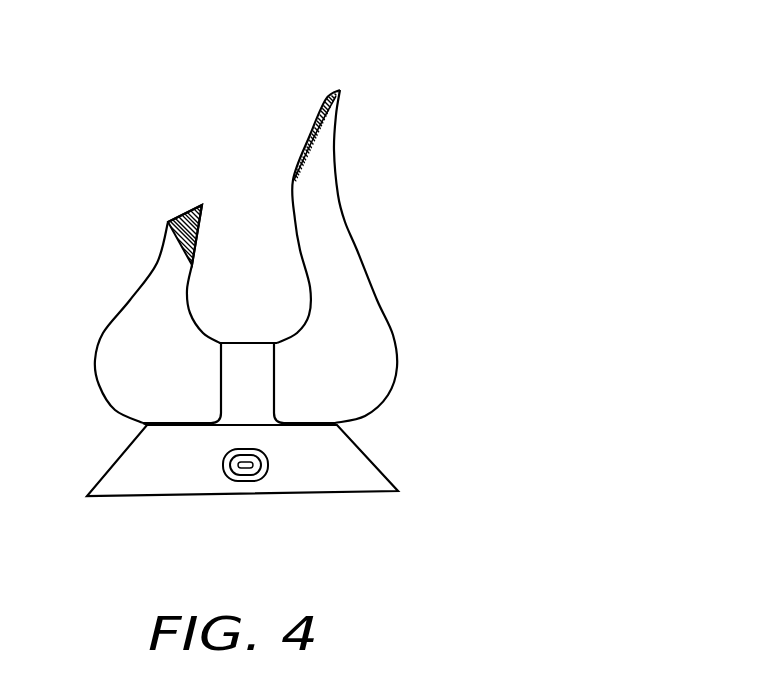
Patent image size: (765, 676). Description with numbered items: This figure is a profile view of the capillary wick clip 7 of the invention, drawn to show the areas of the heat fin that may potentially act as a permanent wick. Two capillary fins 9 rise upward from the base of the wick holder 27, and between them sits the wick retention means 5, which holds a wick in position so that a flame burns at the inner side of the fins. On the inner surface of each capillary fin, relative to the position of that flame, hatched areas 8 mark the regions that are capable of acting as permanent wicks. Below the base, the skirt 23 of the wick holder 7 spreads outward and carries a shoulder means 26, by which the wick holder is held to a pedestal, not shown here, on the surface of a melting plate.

The wick retention means 5 is at (274, 379).
The capillary wick clip 7 is at (376, 201).
The permanent wick areas 8 is at (180, 218).
The capillary fins 9 is at (165, 351).
The skirt 23 is at (348, 485).
The shoulder means 26 is at (230, 478).
The base of the wick holder 27 is at (172, 425).